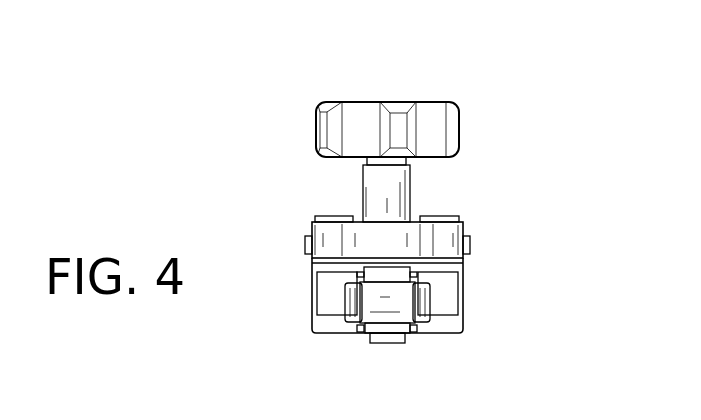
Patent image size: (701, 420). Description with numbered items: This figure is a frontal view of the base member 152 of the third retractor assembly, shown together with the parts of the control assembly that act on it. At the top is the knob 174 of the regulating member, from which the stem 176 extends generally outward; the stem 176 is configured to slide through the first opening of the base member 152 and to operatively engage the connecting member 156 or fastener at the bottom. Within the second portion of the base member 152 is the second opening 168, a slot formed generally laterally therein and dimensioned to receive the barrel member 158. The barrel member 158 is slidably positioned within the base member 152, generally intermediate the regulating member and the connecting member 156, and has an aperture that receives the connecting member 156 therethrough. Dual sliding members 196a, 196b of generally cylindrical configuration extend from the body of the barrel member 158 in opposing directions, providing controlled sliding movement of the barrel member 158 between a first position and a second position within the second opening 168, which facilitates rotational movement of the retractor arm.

The knob 174 is at (425, 102).
The stem 176 is at (405, 192).
The base member 152 is at (463, 268).
The second opening 168 is at (447, 295).
The barrel member 158 is at (375, 298).
The sliding member 196a is at (352, 320).
The sliding member 196b is at (423, 320).
The connecting member 156 is at (388, 343).